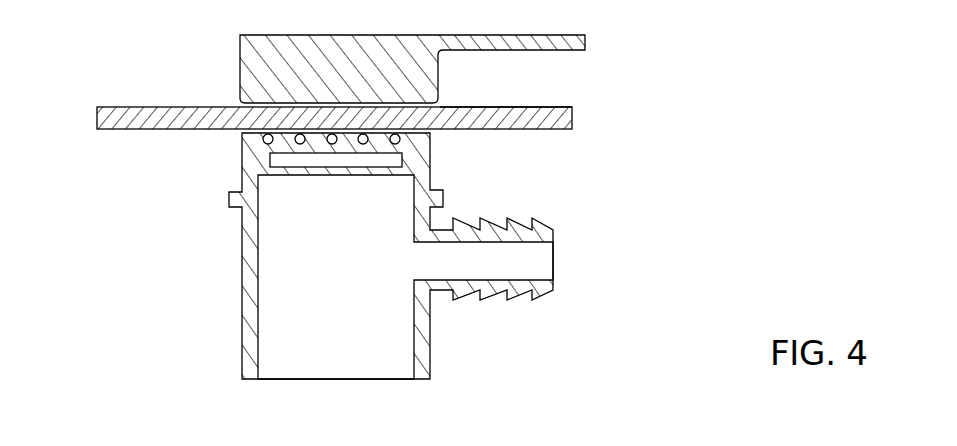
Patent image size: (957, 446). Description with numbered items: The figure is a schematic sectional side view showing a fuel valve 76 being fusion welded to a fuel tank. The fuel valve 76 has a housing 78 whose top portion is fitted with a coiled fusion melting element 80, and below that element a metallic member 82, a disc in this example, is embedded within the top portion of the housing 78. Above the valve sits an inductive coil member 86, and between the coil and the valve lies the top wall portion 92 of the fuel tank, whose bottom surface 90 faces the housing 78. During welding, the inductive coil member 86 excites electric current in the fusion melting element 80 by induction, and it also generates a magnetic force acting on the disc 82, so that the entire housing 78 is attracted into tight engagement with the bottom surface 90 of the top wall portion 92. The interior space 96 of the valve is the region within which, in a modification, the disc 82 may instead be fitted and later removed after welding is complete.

The fuel valve 76 is at (348, 232).
The housing 78 is at (241, 277).
The coiled fusion melting element 80 is at (264, 141).
The metallic member 82 is at (392, 163).
The inductive coil member 86 is at (240, 64).
The bottom surface 90 is at (565, 129).
The top wall portion 92 is at (513, 107).
The space 96 is at (345, 332).